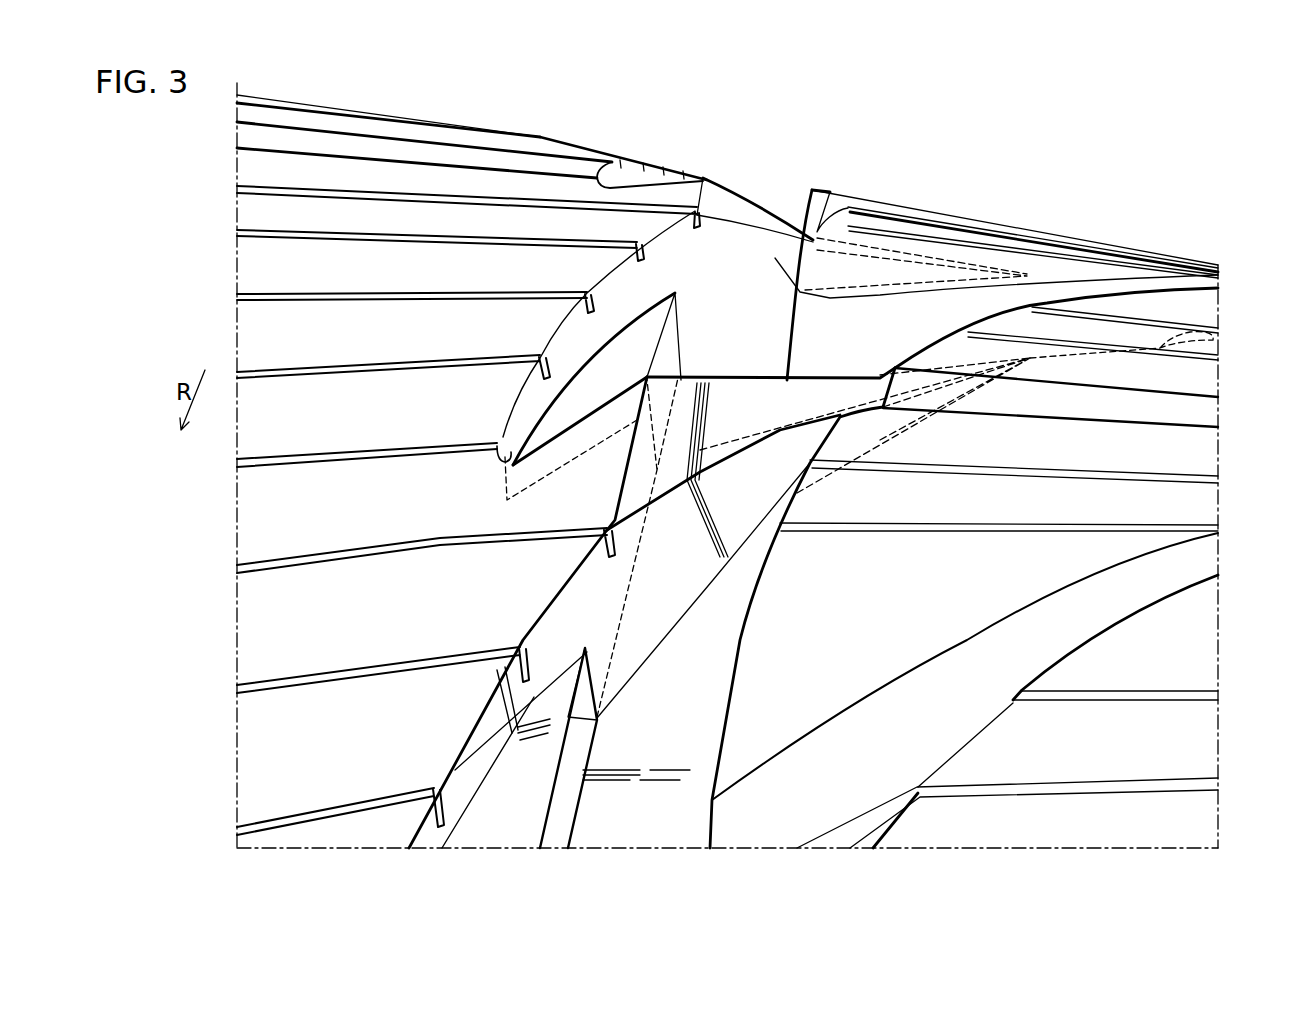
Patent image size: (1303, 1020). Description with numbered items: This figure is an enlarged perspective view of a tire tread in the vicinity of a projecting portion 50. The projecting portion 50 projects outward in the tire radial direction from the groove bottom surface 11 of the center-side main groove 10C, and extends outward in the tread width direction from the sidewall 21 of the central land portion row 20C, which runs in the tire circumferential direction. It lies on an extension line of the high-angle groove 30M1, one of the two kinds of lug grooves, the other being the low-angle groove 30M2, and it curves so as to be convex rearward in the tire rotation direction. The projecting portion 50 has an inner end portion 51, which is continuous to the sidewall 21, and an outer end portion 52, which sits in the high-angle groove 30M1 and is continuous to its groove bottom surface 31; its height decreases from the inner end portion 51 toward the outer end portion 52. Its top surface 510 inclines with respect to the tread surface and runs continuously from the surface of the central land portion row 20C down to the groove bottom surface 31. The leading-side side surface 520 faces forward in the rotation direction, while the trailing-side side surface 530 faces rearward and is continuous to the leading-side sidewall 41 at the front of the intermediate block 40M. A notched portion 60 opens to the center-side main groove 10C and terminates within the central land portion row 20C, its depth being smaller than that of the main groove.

The central land portion row 20C is at (462, 106).
The inner end portion 51 is at (710, 208).
The projecting portion 50 is at (777, 192).
The top surface 510 is at (780, 257).
The leading-side side surface 520 is at (815, 205).
The leading-side sidewall 41 is at (940, 307).
The outer end portion 52 is at (1044, 376).
The intermediate block 40M is at (1141, 244).
The high-angle groove 30M1 is at (1208, 289).
The groove bottom surface 31 is at (1215, 340).
The low-angle groove 30M2 is at (1208, 406).
The notched portion 60 is at (560, 344).
The sidewall 21 is at (675, 350).
The trailing-side side surface 530 is at (742, 383).
The center-side main groove 10C is at (591, 841).
The groove bottom surface 11 is at (675, 822).